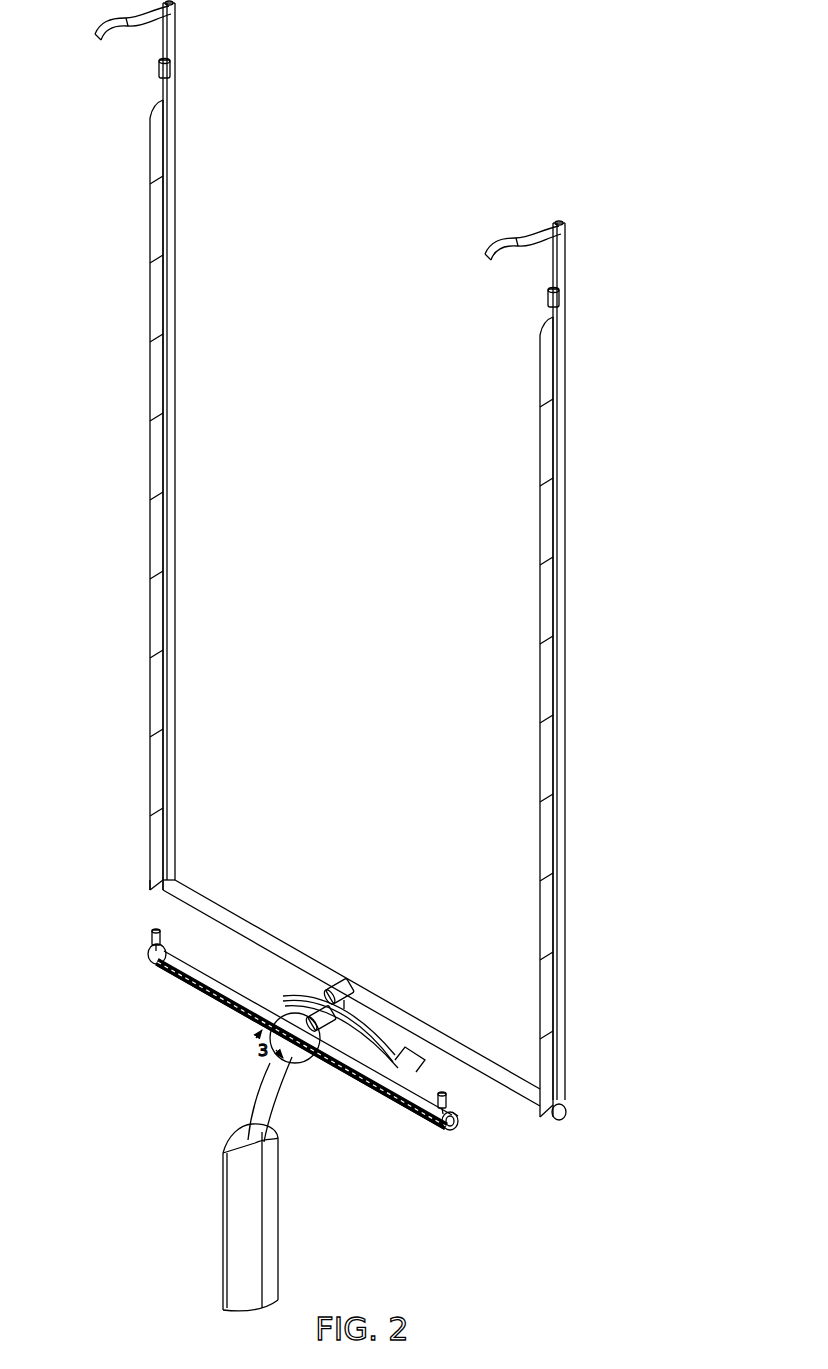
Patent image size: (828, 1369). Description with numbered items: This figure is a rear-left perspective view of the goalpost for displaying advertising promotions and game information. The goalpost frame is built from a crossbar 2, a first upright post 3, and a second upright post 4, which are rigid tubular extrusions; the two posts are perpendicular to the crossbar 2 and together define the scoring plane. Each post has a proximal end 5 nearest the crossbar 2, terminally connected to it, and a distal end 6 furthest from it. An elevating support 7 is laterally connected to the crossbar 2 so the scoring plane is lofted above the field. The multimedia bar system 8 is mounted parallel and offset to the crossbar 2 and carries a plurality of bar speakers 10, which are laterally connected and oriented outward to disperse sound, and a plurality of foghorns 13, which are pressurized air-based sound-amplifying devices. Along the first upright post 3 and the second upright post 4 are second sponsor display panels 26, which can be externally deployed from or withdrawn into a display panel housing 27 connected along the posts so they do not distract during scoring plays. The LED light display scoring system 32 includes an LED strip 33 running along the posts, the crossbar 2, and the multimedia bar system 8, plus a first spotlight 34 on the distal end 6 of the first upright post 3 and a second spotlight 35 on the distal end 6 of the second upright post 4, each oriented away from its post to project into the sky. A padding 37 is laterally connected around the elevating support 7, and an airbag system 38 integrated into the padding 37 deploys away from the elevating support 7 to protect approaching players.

The crossbar 2 is at (236, 920).
The first upright post 3 is at (557, 648).
The second upright post 4 is at (170, 452).
The proximal end 5 is at (150, 810).
The distal end 6 is at (152, 50).
The elevating support 7 is at (350, 992).
The multimedia bar system 8 is at (150, 938).
The bar speakers 10 is at (358, 1088).
The foghorns 13 is at (455, 1130).
The second sponsor display panels 26 is at (165, 228).
The display panel housing 27 is at (165, 695).
The LED light display scoring system 32 is at (440, 1132).
The LED strip 33 is at (312, 1085).
The first spotlight 34 is at (560, 300).
The second spotlight 35 is at (172, 70).
The padding 37 is at (240, 1133).
The airbag system 38 is at (270, 1243).